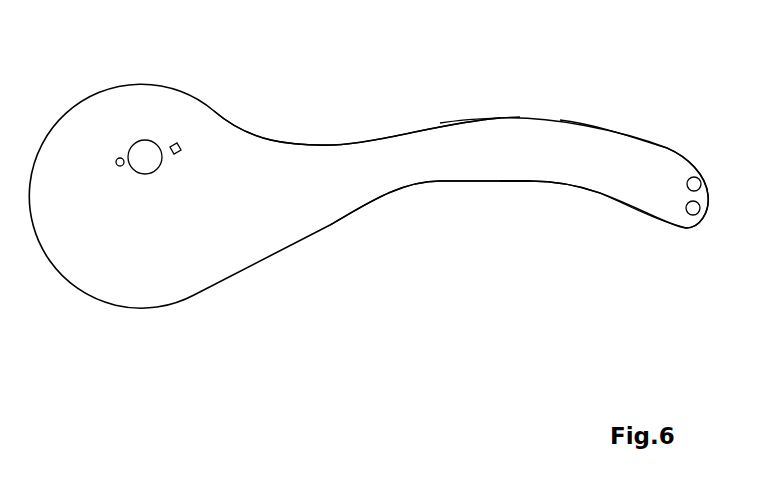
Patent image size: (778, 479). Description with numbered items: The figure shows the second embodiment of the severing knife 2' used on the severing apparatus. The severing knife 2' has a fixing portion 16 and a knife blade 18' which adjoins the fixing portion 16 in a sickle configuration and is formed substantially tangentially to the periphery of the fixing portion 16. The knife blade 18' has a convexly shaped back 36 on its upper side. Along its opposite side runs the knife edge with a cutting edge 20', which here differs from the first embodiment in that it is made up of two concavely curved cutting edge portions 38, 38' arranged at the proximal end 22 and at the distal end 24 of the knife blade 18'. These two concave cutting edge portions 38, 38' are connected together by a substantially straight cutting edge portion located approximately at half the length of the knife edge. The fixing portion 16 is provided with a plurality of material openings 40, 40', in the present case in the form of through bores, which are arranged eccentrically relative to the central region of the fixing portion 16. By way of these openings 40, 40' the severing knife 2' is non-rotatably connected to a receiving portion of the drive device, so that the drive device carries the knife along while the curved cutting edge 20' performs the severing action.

The fixing portion 16 is at (133, 265).
The material opening 40 is at (153, 106).
The material opening 40' is at (216, 111).
The severing knife 2' is at (273, 87).
The proximal end 22 is at (387, 170).
The convexly shaped back 36 is at (481, 115).
The knife blade 18' is at (621, 99).
The distal end 24 is at (650, 168).
The cutting edge portion 38 is at (385, 287).
The cutting edge 20' is at (548, 299).
The cutting edge portion 38' is at (629, 300).